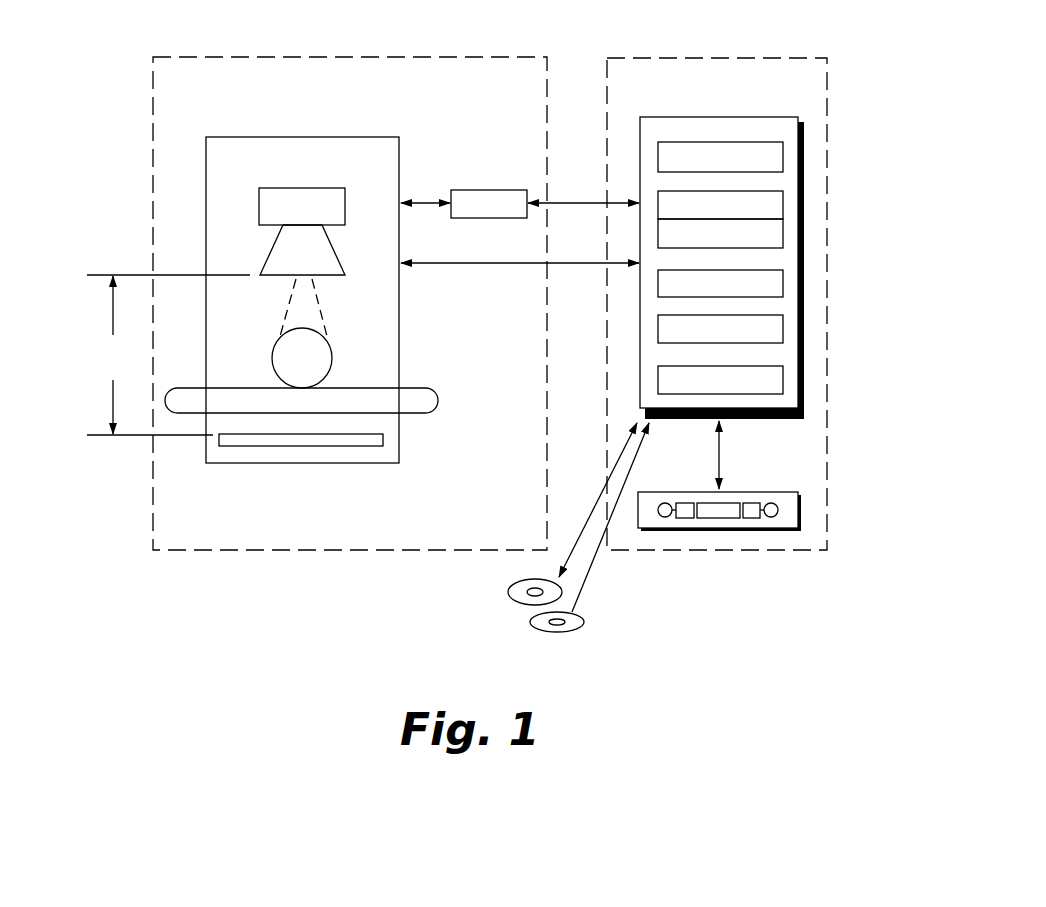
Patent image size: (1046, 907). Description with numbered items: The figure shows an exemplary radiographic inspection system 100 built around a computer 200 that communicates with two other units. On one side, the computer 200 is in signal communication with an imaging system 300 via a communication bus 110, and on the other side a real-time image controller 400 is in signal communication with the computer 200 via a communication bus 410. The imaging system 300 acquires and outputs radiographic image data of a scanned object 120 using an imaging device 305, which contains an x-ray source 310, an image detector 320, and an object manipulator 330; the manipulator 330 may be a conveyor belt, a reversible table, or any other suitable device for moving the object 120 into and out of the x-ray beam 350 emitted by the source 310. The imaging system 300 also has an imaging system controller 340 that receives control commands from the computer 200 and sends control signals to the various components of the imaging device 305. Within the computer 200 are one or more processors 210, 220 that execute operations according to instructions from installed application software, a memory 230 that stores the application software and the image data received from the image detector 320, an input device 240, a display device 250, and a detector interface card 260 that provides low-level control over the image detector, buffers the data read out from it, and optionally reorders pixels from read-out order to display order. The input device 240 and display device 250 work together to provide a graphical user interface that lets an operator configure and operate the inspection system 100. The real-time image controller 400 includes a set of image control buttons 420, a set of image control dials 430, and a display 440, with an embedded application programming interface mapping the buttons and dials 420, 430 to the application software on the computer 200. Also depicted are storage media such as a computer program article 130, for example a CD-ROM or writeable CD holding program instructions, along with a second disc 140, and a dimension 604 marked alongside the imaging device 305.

The radiographic inspection system 100 is at (625, 58).
The communication bus 110 is at (570, 204).
The scanned object 120 is at (332, 376).
The computer program article 130 is at (508, 592).
The optical disc 140 is at (530, 624).
The computer 200 is at (828, 213).
The processor 210 is at (783, 205).
The processor 220 is at (783, 235).
The memory 230 is at (783, 158).
The input device 240 is at (783, 330).
The display device 250 is at (783, 283).
The detector interface card 260 is at (783, 380).
The imaging system 300 is at (183, 550).
The imaging device 305 is at (206, 218).
The x-ray source 310 is at (273, 188).
The image detector 320 is at (322, 446).
The object manipulator 330 is at (417, 413).
The imaging system controller 340 is at (476, 190).
The x-ray beam 350 is at (318, 292).
The real-time image controller 400 is at (801, 512).
The communication bus 410 is at (720, 450).
The image control buttons 420 is at (757, 503).
The image control dials 430 is at (665, 518).
The display 440 is at (725, 518).
The distance 604 is at (100, 368).